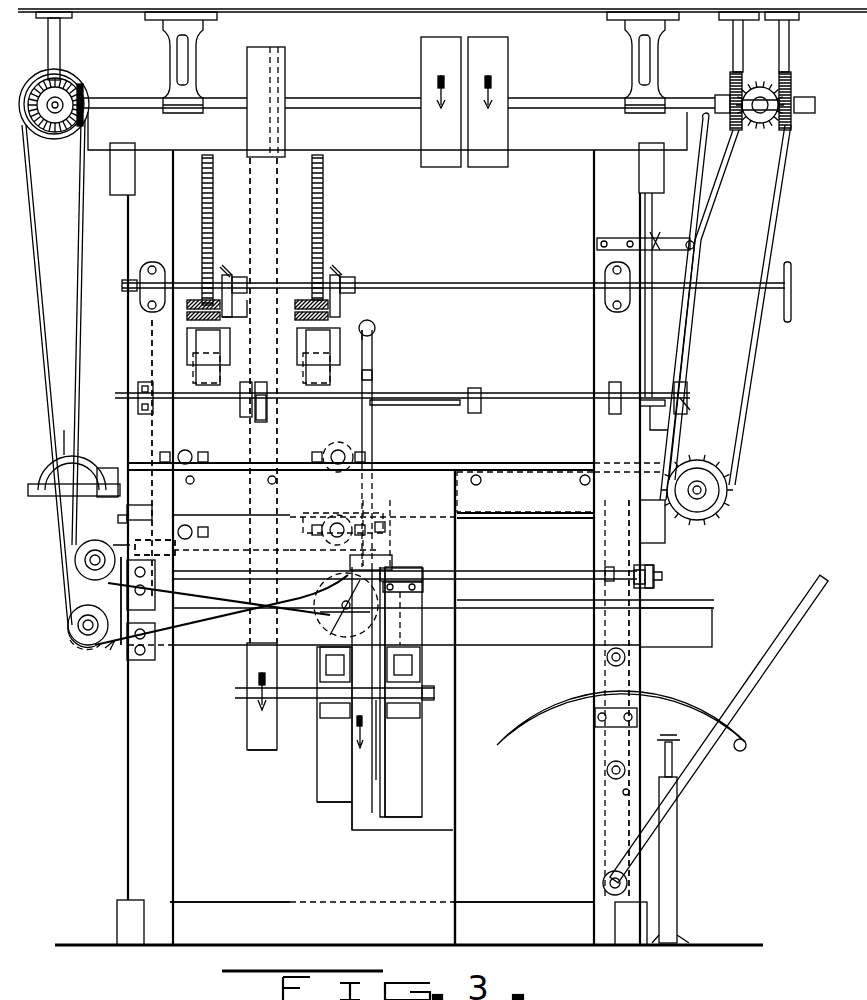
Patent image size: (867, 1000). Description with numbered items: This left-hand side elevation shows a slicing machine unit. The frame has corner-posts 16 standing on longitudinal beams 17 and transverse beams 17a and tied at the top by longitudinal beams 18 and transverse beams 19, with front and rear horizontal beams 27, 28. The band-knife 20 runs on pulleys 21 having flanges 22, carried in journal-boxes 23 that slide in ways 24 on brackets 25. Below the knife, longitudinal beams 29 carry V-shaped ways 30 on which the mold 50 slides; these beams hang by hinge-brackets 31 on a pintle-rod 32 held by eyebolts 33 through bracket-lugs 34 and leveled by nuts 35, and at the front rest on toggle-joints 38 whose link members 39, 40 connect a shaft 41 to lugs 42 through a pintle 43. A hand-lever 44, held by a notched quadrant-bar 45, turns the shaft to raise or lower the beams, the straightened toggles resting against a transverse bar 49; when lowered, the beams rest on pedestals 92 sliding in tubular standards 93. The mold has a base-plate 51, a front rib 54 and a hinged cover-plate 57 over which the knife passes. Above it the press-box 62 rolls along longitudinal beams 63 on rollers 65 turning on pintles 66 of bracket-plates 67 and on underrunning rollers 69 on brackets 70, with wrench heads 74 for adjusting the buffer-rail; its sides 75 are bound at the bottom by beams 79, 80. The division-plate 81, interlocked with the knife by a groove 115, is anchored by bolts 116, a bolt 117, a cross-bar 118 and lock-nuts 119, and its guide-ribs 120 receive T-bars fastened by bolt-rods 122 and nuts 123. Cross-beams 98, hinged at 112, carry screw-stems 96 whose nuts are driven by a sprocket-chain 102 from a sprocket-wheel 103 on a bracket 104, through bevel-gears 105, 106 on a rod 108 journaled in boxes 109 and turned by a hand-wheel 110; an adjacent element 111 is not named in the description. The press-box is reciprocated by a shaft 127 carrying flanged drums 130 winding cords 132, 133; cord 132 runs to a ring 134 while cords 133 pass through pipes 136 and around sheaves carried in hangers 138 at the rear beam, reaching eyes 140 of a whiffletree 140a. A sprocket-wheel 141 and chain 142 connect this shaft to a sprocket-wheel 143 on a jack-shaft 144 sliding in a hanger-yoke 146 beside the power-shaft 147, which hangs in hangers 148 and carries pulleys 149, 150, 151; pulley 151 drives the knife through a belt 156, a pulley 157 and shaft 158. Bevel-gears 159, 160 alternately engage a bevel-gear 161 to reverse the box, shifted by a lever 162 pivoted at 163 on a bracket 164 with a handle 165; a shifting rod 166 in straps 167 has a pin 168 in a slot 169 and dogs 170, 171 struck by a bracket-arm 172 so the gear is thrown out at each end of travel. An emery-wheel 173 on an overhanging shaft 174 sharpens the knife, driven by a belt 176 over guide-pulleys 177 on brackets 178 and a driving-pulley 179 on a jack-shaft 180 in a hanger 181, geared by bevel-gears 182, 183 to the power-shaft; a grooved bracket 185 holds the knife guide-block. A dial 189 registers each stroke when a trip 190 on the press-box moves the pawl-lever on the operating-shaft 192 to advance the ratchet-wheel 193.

The corner-posts 16 is at (128, 806).
The horizontal longitudinal beams 17 is at (515, 902).
The transverse beams 17a is at (117, 918).
The longitudinal beams 18 is at (557, 150).
The transverse beams 19 is at (126, 198).
The band-knife 20 is at (362, 830).
The pulleys 21 is at (340, 810).
The flange 22 is at (385, 820).
The journal-boxes 23 is at (435, 696).
The longitudinal ways 24 is at (330, 680).
The brackets 25 is at (318, 790).
The horizontal beam 27 is at (665, 545).
The horizontal beam 28 is at (108, 468).
The longitudinal beams 29 is at (690, 648).
The V-shaped ways 30 is at (715, 604).
The hinge-brackets 31 is at (97, 660).
The pintle-rod 32 is at (65, 650).
The eyebolts 33 is at (70, 600).
The bracket-lugs 34 is at (119, 590).
The nuts 35 is at (85, 556).
The toggle-joints 38 is at (607, 773).
The link member 39 is at (610, 852).
The link member 40 is at (598, 700).
The transverse shaft 41 is at (603, 885).
The lugs 42 is at (640, 632).
The pintle 43 is at (626, 660).
The hand-lever 44 is at (740, 700).
The notched quadrant-bar 45 is at (748, 748).
The transverse bar 49 is at (622, 793).
The mold 50 is at (258, 588).
The base-plate 51 is at (205, 595).
The rib 54 is at (405, 618).
The cover-plate 57 is at (240, 579).
The press-box 62 is at (372, 378).
The longitudinal beams 63 is at (490, 707).
The rollers 65 is at (188, 450).
The pintles 66 is at (208, 457).
The bracket-plates 67 is at (208, 459).
The underrunning rollers 69 is at (190, 525).
The brackets 70 is at (208, 532).
The heads 74 is at (478, 476).
The sides 75 is at (375, 328).
The beams 79 is at (258, 558).
The beams 80 is at (160, 552).
The division-plate 81 is at (570, 580).
The pedestals 92 is at (667, 745).
The tubular standards 93 is at (678, 862).
The screw-stems 96 is at (214, 212).
The cross-beams 98 is at (187, 345).
The sprocket-chain 102 is at (235, 318).
The sprocket-wheel 103 is at (187, 316).
The bracket 104 is at (196, 355).
The bevel-gear 105 is at (200, 298).
The vertical bevel-gear 106 is at (225, 265).
The longitudinal rod 108 is at (495, 285).
The boxes 109 is at (140, 282).
The hand-wheel 110 is at (788, 322).
The bracket 111 is at (240, 280).
The hinge 112 is at (222, 360).
The rectangular groove 115 is at (350, 565).
The bolts 116 is at (662, 577).
The bolt 117 is at (610, 567).
The cross-bar 118 is at (145, 592).
The lock-nuts 119 is at (650, 585).
The guide-ribs 120 is at (552, 571).
The vertical bolt-rods 122 is at (150, 425).
The nuts 123 is at (372, 330).
The shaft 127 is at (710, 490).
The flanged drums 130 is at (710, 502).
The under rope 132 is at (540, 520).
The upper cords 133 is at (644, 468).
The ring 134 is at (385, 525).
The pipes 136 is at (538, 463).
The arch support 138 is at (38, 482).
The eyes 140 is at (118, 518).
The whiffletree 140a is at (135, 505).
The sprocket-wheel 141 is at (735, 478).
The chain 142 is at (755, 400).
The sprocket-wheel 143 is at (768, 122).
The jack-shaft 144 is at (775, 122).
The hanger-yoke 146 is at (738, 33).
The power-shaft 147 is at (372, 98).
The hangers 148 is at (195, 55).
The pulley 149 is at (490, 160).
The driving-pulley 150 is at (440, 160).
The pulley 151 is at (288, 70).
The belt 156 is at (278, 210).
The pulley 157 is at (64, 440).
The shaft 158 is at (247, 700).
The bevel-gear 159 is at (791, 85).
The bevel-gear 160 is at (730, 85).
The bevel-gear 161 is at (757, 125).
The shifting-lever 162 is at (700, 208).
The pivot 163 is at (702, 250).
The bracket 164 is at (658, 240).
The handle 165 is at (660, 425).
The shifting rod 166 is at (545, 393).
The straps 167 is at (138, 392).
The pin 168 is at (690, 395).
The slot 169 is at (690, 400).
The collar or dog 170 is at (480, 392).
The collar or dog 171 is at (245, 400).
The bracket-arm 172 is at (266, 415).
The emery-wheel 173 is at (338, 622).
The overhanging shaft 174 is at (330, 620).
The belt 176 is at (40, 305).
The guide-pulleys 177 is at (78, 545).
The brackets 178 is at (128, 660).
The driving-pulley 179 is at (75, 80).
The jack-shaft 180 is at (55, 115).
The hanger 181 is at (61, 40).
The bevel-gear 182 is at (50, 75).
The bevel-gear 183 is at (85, 92).
The grooved bracket 185 is at (420, 590).
The dial 189 is at (640, 240).
The trip 190 is at (430, 400).
The operating-shaft 192 is at (645, 325).
The ratchet-wheel 193 is at (640, 402).